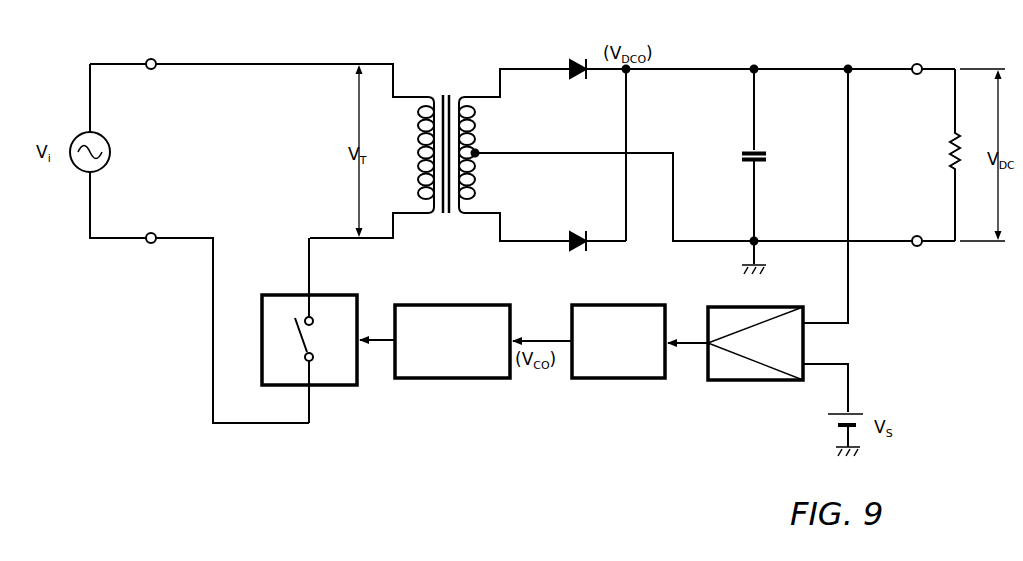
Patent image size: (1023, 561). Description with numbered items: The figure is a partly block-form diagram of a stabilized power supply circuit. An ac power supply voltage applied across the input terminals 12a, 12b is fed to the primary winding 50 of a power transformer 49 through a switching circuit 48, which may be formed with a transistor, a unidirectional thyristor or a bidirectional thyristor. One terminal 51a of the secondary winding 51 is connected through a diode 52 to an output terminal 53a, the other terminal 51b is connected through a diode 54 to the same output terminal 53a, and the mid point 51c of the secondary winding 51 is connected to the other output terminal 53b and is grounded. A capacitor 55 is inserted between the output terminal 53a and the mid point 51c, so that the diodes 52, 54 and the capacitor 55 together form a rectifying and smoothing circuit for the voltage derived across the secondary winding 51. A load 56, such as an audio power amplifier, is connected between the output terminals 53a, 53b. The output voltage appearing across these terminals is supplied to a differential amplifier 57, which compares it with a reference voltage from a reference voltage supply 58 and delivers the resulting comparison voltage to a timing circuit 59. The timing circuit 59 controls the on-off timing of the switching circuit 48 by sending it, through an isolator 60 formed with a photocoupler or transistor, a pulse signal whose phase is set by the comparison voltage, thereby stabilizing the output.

The input terminal 12a is at (152, 58).
The input terminal 12b is at (150, 244).
The switching circuit 48 is at (343, 387).
The power transformer 49 is at (558, 143).
The primary winding 50 is at (418, 130).
The secondary winding 51 is at (476, 125).
The terminal of the secondary winding 51a is at (500, 80).
The other terminal of the secondary winding 51b is at (499, 227).
The mid point of the secondary winding 51c is at (478, 157).
The diode 52 is at (579, 62).
The output terminal 53a is at (917, 64).
The other output terminal 53b is at (917, 247).
The diode 54 is at (580, 248).
The capacitor 55 is at (768, 157).
The load 56 is at (950, 157).
The differential amplifier 57 is at (765, 382).
The reference voltage supply 58 is at (860, 413).
The timing circuit 59 is at (628, 380).
The isolator 60 is at (470, 380).